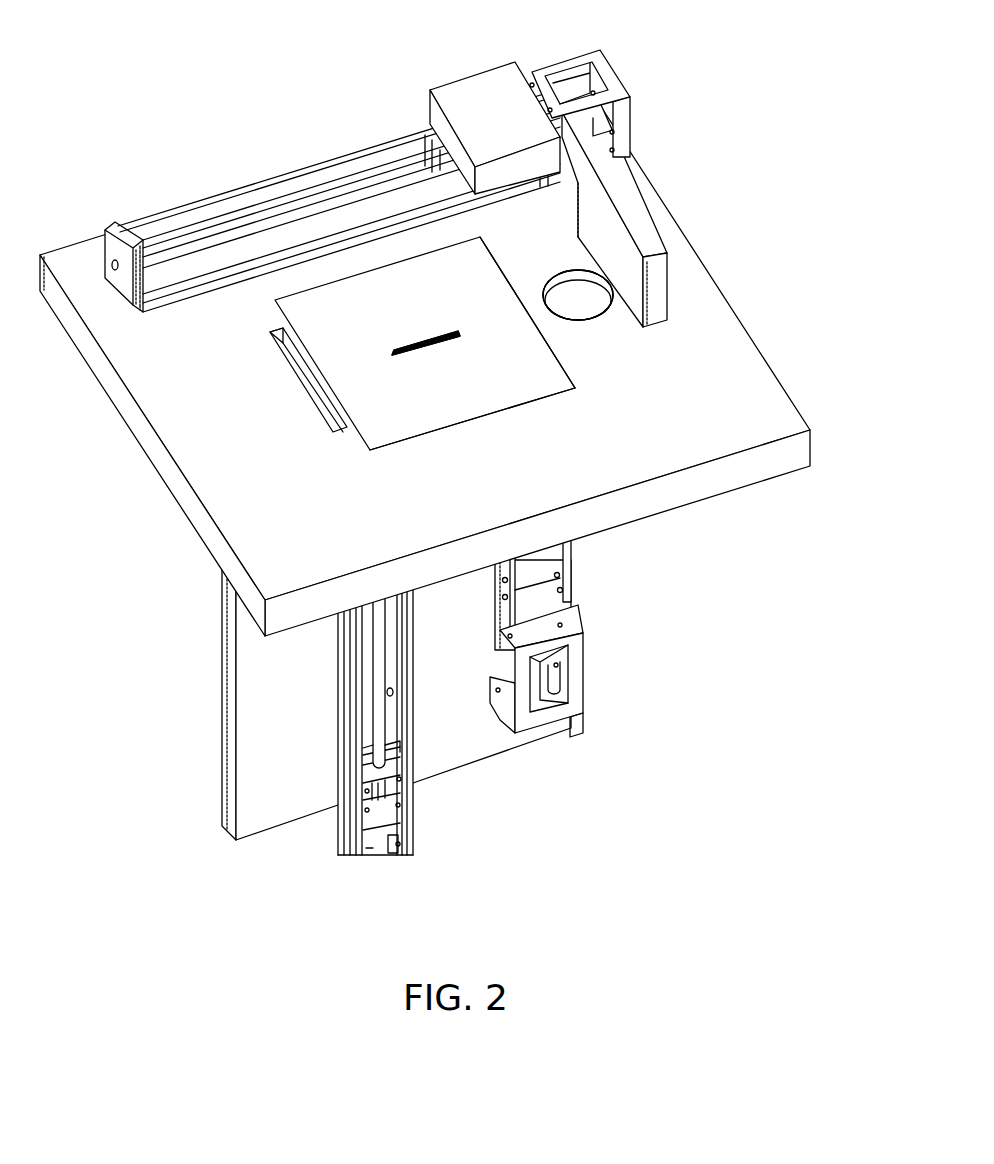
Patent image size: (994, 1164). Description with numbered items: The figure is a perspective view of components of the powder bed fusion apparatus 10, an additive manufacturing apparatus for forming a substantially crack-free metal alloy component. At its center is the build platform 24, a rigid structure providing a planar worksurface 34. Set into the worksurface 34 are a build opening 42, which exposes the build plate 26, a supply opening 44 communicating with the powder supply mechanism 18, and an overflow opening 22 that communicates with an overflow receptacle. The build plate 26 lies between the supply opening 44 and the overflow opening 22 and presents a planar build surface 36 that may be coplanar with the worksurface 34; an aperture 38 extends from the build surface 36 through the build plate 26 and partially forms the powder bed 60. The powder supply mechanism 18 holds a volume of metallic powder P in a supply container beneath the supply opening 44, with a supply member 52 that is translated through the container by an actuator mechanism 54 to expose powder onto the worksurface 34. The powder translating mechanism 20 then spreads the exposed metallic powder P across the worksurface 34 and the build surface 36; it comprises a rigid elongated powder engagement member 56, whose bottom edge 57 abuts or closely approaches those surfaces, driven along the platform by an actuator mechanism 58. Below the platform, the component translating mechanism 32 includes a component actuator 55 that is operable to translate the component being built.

The powder bed fusion apparatus 10 is at (428, 462).
The powder supply mechanism 18 is at (592, 312).
The powder translating mechanism 20 is at (468, 66).
The overflow opening 22 is at (302, 393).
The build platform 24 is at (152, 433).
The build plate 26 is at (455, 405).
The component translating mechanism 32 is at (420, 820).
The worksurface 34 is at (670, 447).
The build surface 36 is at (510, 362).
The aperture 38 is at (422, 337).
The build opening 42 is at (427, 435).
The supply opening 44 is at (560, 273).
The supply member 52 is at (570, 310).
The actuator mechanism 54 is at (538, 673).
The component actuator 55 is at (380, 712).
The powder engagement member 56 is at (630, 273).
The bottom edge 57 is at (657, 327).
The actuator mechanism 58 is at (322, 200).
The powder bed 60 is at (418, 362).
The metallic powder P is at (572, 266).